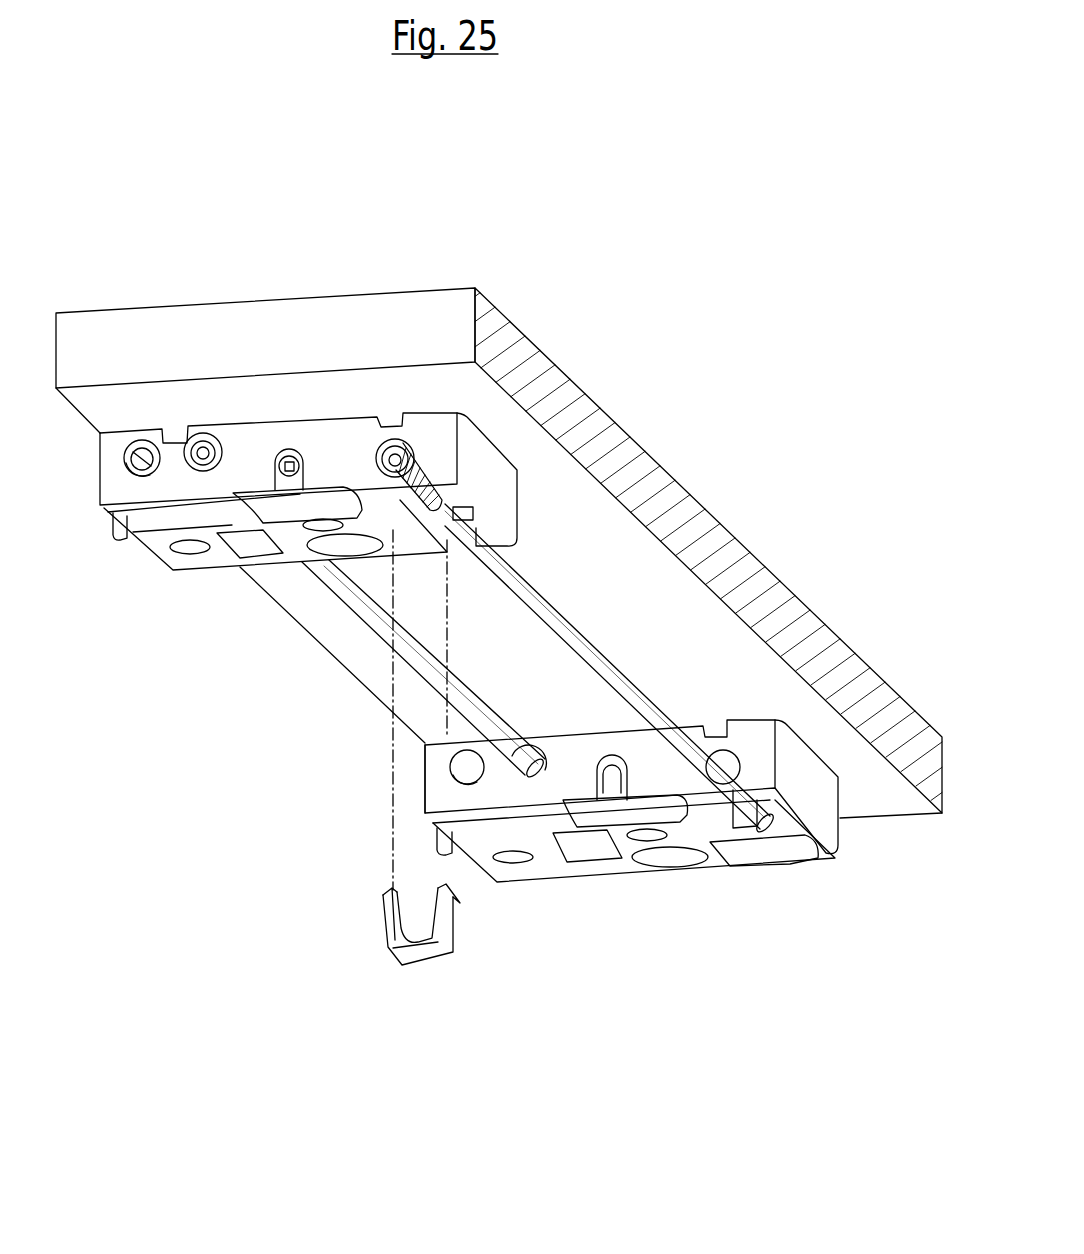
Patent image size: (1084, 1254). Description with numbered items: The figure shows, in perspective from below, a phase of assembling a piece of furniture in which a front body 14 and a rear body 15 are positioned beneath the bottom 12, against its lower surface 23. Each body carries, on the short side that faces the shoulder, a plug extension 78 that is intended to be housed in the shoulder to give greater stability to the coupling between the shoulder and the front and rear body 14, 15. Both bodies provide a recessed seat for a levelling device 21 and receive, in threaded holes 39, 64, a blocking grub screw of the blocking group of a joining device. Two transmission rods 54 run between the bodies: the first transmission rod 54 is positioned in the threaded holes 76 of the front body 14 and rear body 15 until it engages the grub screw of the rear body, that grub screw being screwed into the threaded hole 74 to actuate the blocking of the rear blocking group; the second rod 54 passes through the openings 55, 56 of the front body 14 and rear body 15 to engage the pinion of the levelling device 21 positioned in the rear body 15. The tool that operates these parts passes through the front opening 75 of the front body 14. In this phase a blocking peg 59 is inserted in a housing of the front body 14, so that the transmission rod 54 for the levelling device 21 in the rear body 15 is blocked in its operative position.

The bottom 12 is at (377, 346).
The front body 14 is at (233, 605).
The rear body 15 is at (722, 955).
The levelling device 21 is at (290, 522).
The lower surface 23 is at (543, 452).
The threaded hole 39 is at (135, 472).
The transmission rods 54 is at (465, 685).
The opening 55 is at (400, 440).
The opening 56 is at (713, 787).
The blocking peg 59 is at (388, 947).
The threaded hole 64 is at (477, 776).
The threaded hole 74 is at (548, 757).
The front opening 75 is at (282, 455).
The threaded holes 76 is at (203, 468).
The plug extension 78 is at (122, 540).